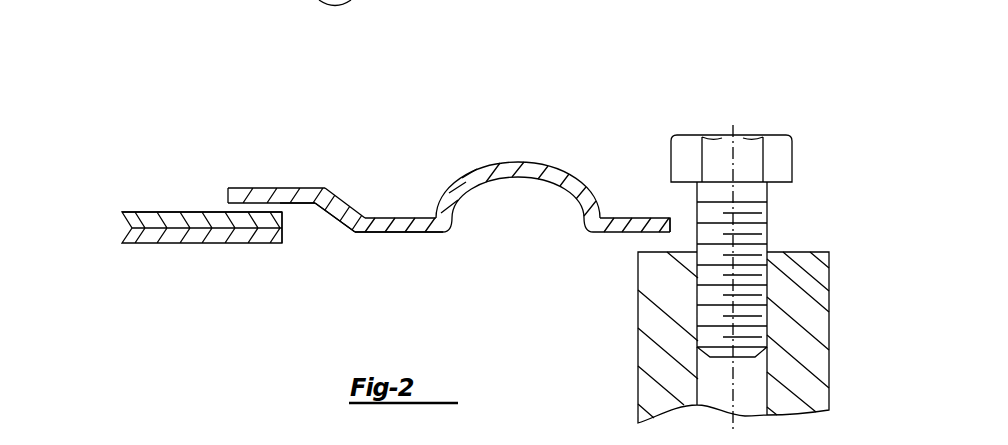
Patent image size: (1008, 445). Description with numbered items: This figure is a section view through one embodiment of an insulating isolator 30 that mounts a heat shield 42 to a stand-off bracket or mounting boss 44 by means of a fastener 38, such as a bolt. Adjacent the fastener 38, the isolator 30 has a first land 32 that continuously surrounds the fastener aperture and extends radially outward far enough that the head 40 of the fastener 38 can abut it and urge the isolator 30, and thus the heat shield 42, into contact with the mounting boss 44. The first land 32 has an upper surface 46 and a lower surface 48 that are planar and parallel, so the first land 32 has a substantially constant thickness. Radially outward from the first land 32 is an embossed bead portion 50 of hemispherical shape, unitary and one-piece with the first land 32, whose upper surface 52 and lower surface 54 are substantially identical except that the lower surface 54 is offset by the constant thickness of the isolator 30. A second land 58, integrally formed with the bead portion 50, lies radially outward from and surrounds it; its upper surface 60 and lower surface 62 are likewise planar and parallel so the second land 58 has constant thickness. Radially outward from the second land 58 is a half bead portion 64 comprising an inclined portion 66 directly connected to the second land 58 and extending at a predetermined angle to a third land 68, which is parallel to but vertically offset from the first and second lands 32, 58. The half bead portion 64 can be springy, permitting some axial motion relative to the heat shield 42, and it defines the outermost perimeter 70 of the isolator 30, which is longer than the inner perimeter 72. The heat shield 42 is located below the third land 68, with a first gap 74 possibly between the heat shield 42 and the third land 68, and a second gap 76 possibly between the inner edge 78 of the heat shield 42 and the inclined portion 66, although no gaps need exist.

The insulating isolator 30 is at (652, 143).
The first land 32 is at (635, 217).
The fastener 38 is at (760, 218).
The head 40 is at (745, 148).
The heat shield 42 is at (122, 232).
The stand-off bracket or mounting boss 44 is at (803, 330).
The upper surface of first land 46 is at (603, 217).
The lower surface of first land 48 is at (605, 233).
The embossed bead portion 50 is at (480, 153).
The upper surface of bead portion 52 is at (518, 162).
The lower surface of bead portion 54 is at (520, 180).
The second land 58 is at (387, 218).
The upper surface of second land 60 is at (422, 218).
The lower surface of second land 62 is at (370, 232).
The half bead portion 64 is at (309, 246).
The inclined portion 66 is at (338, 208).
The third land 68 is at (247, 188).
The outermost perimeter 70 is at (227, 188).
The inner perimeter 72 is at (672, 228).
The first gap 74 is at (245, 208).
The second gap 76 is at (305, 220).
The inner edge of heat shield 78 is at (283, 214).